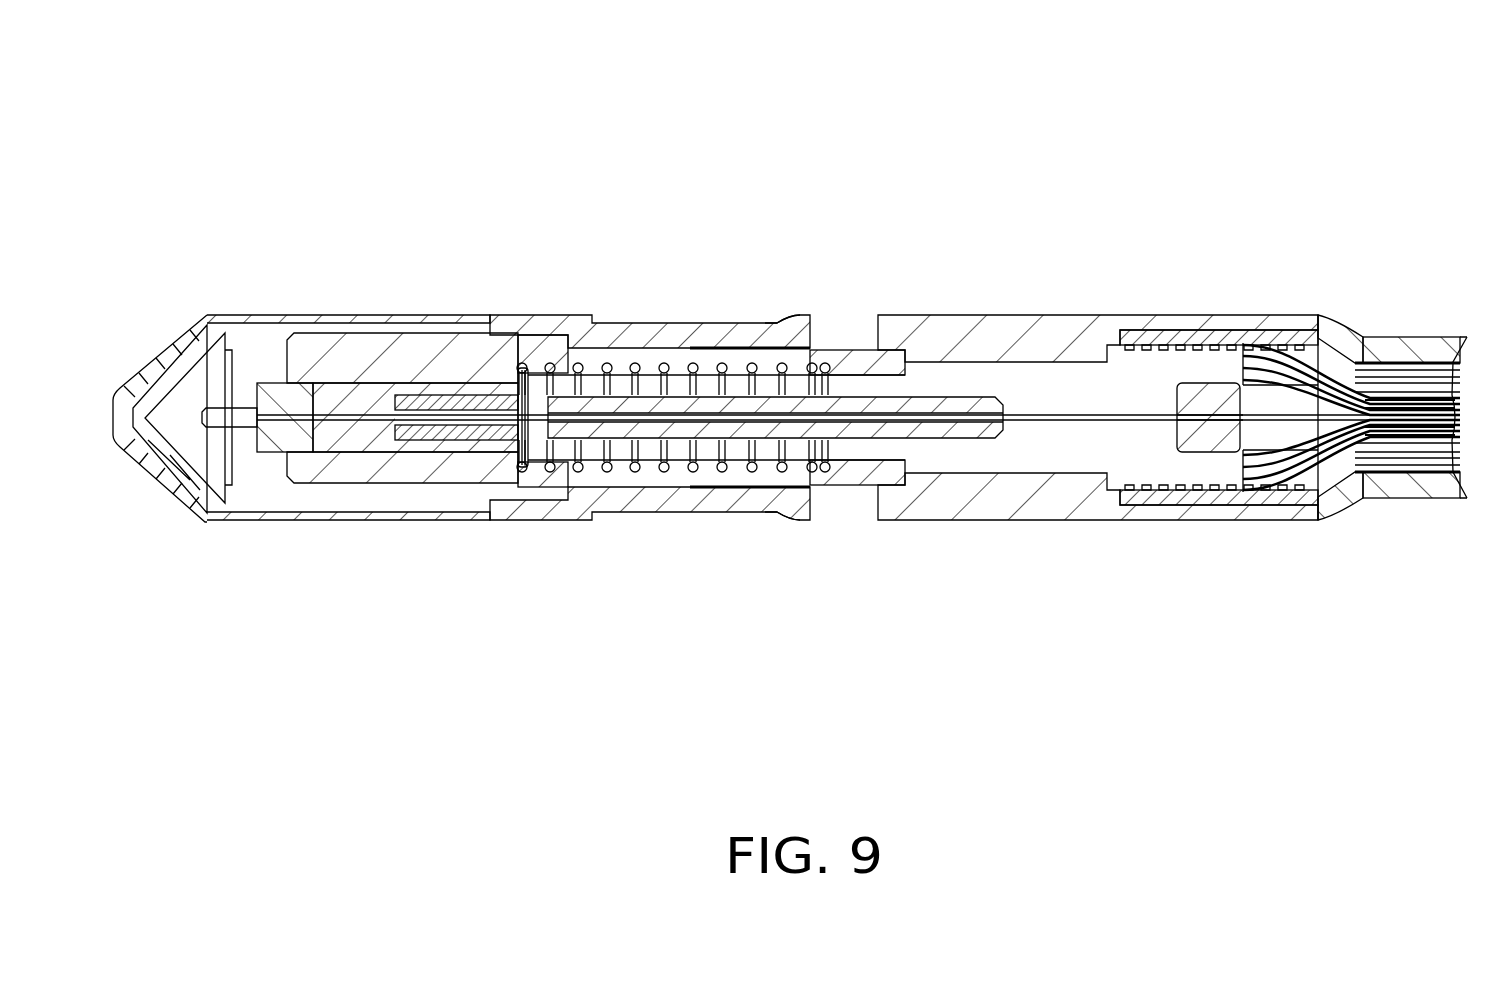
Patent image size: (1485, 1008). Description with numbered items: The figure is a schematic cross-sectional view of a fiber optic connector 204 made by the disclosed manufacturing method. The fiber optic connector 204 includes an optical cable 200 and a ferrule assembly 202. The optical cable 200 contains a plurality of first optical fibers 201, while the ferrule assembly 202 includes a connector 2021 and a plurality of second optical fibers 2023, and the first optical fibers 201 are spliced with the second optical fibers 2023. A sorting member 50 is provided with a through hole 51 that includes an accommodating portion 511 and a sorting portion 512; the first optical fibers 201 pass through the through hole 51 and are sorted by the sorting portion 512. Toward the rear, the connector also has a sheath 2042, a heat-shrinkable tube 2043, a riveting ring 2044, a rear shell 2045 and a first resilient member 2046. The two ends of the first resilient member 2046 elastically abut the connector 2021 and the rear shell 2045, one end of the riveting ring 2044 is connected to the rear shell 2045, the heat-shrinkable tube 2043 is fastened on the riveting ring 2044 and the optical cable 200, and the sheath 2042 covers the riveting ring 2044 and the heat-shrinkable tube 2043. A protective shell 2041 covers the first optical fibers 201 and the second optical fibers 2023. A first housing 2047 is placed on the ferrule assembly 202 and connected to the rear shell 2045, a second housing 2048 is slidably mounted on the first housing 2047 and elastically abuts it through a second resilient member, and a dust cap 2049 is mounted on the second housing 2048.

The fiber optic connector 204 is at (876, 80).
The ferrule assembly 202 is at (545, 232).
The connector 2021 is at (442, 395).
The second optical fibers 2023 is at (543, 410).
The first optical fibers 201 is at (1025, 413).
The rear shell 2045 is at (1048, 330).
The riveting ring 2044 is at (1206, 333).
The sheath 2042 is at (1338, 332).
The optical cable 200 is at (1433, 385).
The dust cap 2049 is at (157, 465).
The first resilient member 2046 is at (570, 460).
The second housing 2048 is at (797, 510).
The first housing 2047 is at (842, 497).
The protective shell 2041 is at (938, 440).
The sorting member 50 is at (1197, 438).
The sorting portion 512 is at (1210, 422).
The accommodating portion 511 is at (1313, 423).
The heat-shrinkable tube 2043 is at (1413, 497).
The through hole 51 is at (1357, 590).